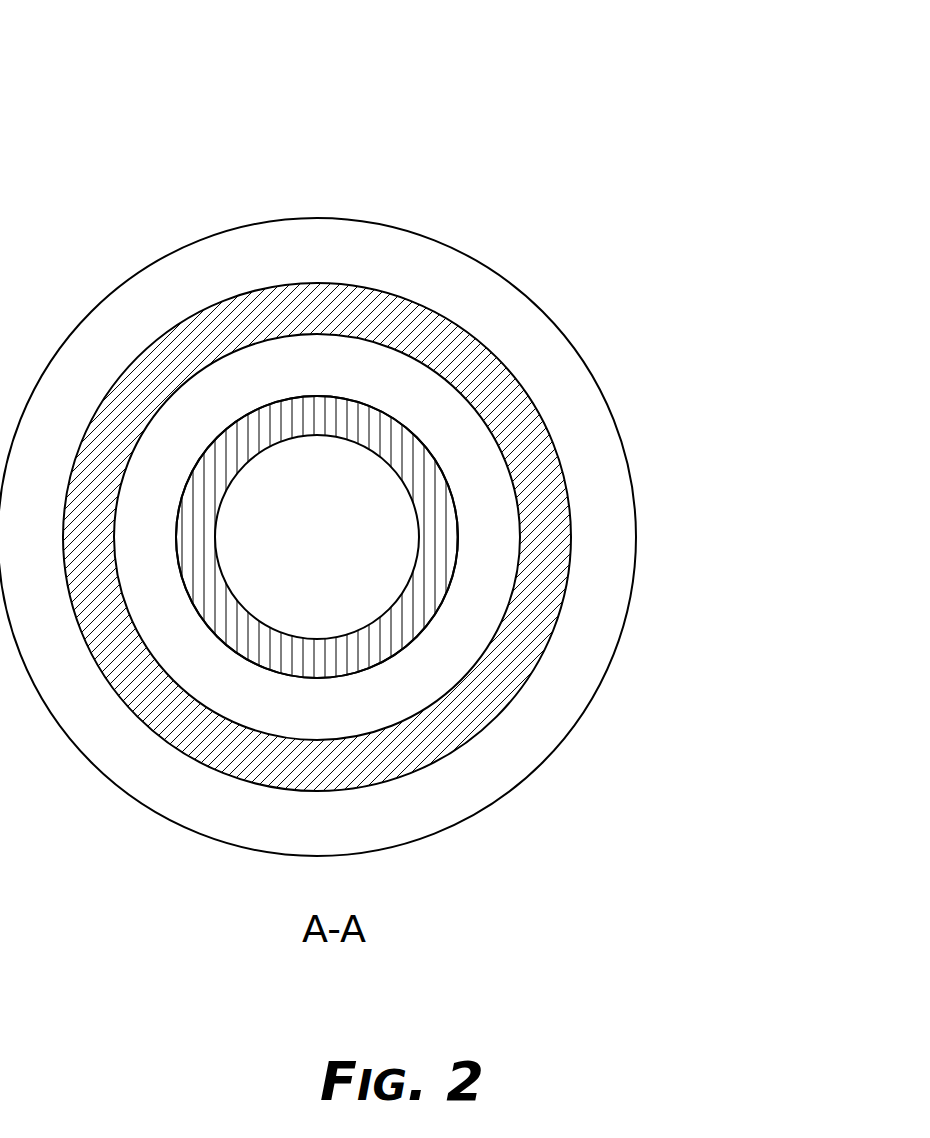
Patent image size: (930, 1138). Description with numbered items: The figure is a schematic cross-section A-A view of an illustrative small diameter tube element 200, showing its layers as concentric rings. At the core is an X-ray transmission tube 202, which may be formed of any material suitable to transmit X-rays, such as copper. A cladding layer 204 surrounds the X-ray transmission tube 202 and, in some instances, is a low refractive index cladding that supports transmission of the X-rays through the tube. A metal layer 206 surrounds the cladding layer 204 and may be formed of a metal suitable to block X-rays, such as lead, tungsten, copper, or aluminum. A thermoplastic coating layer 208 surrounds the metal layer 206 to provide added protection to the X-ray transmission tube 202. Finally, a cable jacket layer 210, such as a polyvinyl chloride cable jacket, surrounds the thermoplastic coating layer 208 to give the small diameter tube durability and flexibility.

The small diameter tube element 200 is at (101, 37).
The X-ray transmission tube 202 is at (270, 528).
The cladding layer 204 is at (413, 475).
The metal layer 206 is at (478, 527).
The thermoplastic coating layer 208 is at (492, 695).
The cable jacket layer 210 is at (457, 777).